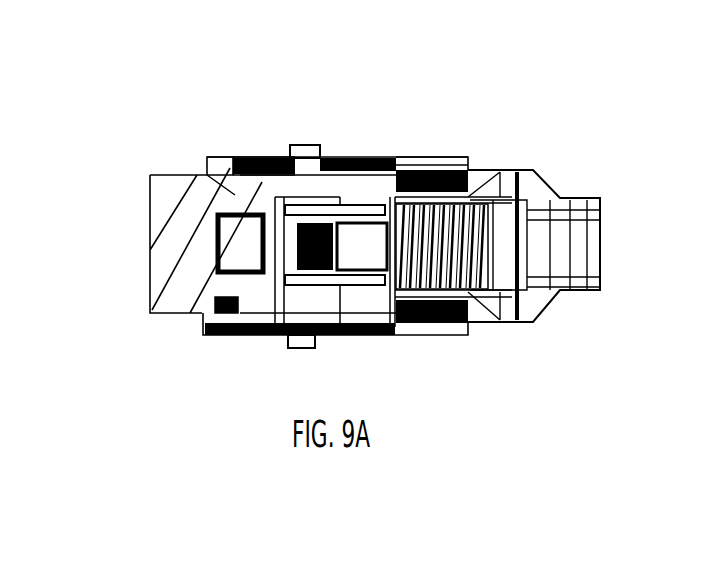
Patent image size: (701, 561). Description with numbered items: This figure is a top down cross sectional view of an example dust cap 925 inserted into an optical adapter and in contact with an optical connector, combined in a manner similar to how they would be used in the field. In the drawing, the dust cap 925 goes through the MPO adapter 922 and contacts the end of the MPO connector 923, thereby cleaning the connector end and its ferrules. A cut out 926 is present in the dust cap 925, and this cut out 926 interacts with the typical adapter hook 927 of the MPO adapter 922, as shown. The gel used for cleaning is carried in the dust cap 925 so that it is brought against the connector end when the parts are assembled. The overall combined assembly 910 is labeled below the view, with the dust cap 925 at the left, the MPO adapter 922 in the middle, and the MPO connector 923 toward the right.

The connector assembly 910 is at (272, 334).
The MPO adapter 922 is at (335, 153).
The MPO connector 923 is at (500, 166).
The dust cap 925 is at (148, 272).
The cut out 926 is at (213, 185).
The adapter hook 927 is at (236, 163).